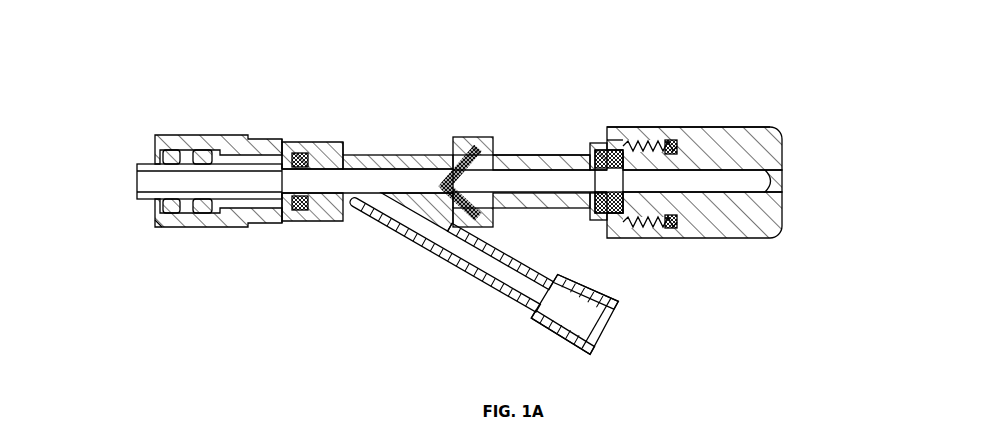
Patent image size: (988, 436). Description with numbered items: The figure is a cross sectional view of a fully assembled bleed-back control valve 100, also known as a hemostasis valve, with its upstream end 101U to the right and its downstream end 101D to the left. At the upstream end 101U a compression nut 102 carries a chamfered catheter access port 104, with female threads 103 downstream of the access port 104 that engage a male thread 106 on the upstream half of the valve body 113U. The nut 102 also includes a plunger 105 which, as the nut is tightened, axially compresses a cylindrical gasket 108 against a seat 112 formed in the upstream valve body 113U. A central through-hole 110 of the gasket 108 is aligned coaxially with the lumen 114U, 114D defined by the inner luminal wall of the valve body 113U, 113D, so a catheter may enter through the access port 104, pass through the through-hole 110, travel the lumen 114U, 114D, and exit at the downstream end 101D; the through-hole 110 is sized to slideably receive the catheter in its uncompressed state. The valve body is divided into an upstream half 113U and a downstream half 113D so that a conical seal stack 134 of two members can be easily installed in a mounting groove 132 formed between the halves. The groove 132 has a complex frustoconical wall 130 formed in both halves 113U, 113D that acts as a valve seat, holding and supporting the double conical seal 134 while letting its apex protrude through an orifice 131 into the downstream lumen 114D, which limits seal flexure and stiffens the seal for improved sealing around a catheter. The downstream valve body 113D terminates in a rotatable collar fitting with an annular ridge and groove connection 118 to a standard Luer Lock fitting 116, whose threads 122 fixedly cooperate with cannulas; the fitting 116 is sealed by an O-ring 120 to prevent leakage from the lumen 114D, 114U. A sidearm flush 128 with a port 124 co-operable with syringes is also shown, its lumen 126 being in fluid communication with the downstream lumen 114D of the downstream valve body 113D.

The bleed-back control valve 100 is at (204, 75).
The downstream end 101D is at (117, 191).
The upstream end 101U is at (822, 185).
The compression nut 102 is at (722, 130).
The female threads 103 is at (660, 143).
The catheter access port 104 is at (770, 187).
The plunger 105 is at (680, 147).
The male thread 106 is at (640, 142).
The cylindrical gasket 108 is at (615, 200).
The central through-hole 110 is at (703, 197).
The seat 112 is at (600, 142).
The downstream half of the valve body 113D is at (343, 140).
The upstream half of the valve body 113U is at (535, 152).
The downstream lumen 114D is at (405, 178).
The upstream lumen 114U is at (497, 185).
The Luer Lock fitting 116 is at (190, 222).
The annular ridge and groove connection 118 is at (332, 216).
The O-ring 120 is at (300, 211).
The threads 122 is at (170, 157).
The port 124 is at (584, 346).
The lumen of the sidearm flush 126 is at (617, 337).
The sidearm flush 128 is at (428, 252).
The frustoconical wall 130 is at (450, 165).
The orifice 131 is at (450, 150).
The mounting groove 132 is at (488, 214).
The conical seal stack 134 is at (472, 225).